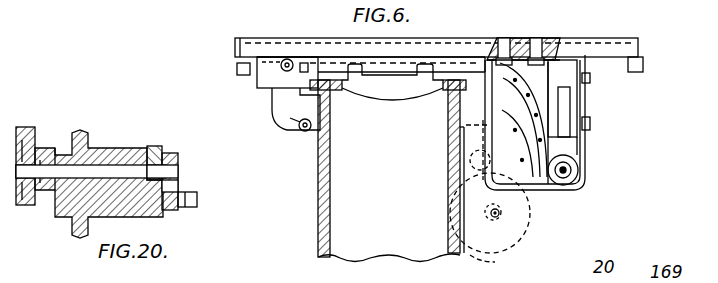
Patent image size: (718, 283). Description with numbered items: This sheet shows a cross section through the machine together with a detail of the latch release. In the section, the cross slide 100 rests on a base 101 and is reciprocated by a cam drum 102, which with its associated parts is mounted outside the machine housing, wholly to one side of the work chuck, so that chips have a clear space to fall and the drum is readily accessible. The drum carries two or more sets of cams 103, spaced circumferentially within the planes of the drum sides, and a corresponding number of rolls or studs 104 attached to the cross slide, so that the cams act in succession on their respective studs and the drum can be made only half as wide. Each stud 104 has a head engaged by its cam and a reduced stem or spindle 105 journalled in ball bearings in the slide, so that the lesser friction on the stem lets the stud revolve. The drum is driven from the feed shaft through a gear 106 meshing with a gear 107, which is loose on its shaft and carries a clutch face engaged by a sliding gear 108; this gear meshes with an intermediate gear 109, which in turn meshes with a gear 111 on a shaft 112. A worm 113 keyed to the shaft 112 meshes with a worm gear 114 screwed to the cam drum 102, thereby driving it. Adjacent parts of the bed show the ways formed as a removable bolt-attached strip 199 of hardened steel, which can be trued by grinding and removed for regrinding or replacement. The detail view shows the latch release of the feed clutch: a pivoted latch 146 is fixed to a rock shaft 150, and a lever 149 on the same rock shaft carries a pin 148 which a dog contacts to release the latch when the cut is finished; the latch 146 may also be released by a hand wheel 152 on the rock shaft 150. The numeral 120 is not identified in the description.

In FIG. 6, the cross slide 100 is at (640, 40).
In FIG. 6, the base 101 is at (643, 60).
In FIG. 6, the cam drum 102 is at (548, 190).
In FIG. 6, the cams 103 is at (510, 40).
In FIG. 6, the rolls or studs 104 is at (557, 43).
In FIG. 6, the reduced stem or spindle 105 is at (543, 38).
In FIG. 6, the gear 106 is at (458, 132).
In FIG. 6, the gear 107 is at (457, 150).
In FIG. 6, the sliding gear 108 is at (455, 177).
In FIG. 6, the intermediate gear 109 is at (530, 188).
In FIG. 6, the gear 111 is at (560, 185).
In FIG. 6, the shaft 112 is at (578, 170).
In FIG. 6, the worm 113 is at (583, 147).
In FIG. 6, the worm gear 114 is at (590, 128).
In FIG. 6, the drive gear 120 is at (497, 265).
In FIG. 6, the removable bolt-attached strip 199 is at (335, 98).
In FIG. 20, the pivoted latch 146 is at (142, 150).
In FIG. 20, the pin 148 is at (197, 203).
In FIG. 20, the lever 149 is at (177, 183).
In FIG. 20, the rock shaft 150 is at (103, 163).
In FIG. 20, the hand wheel 152 is at (37, 127).